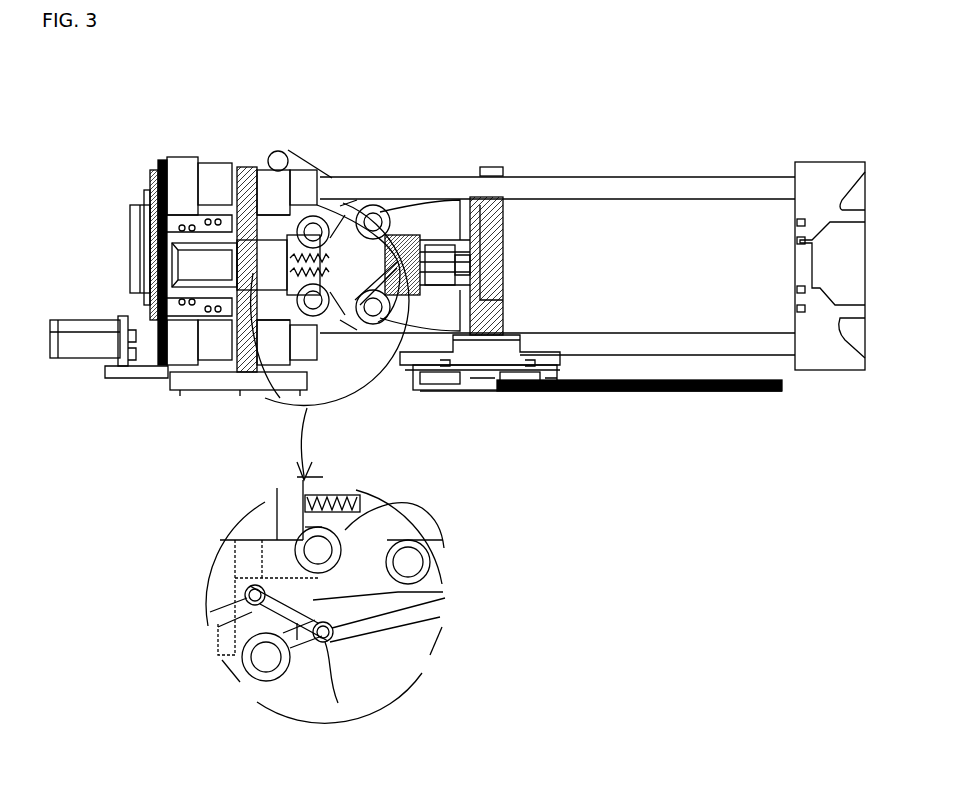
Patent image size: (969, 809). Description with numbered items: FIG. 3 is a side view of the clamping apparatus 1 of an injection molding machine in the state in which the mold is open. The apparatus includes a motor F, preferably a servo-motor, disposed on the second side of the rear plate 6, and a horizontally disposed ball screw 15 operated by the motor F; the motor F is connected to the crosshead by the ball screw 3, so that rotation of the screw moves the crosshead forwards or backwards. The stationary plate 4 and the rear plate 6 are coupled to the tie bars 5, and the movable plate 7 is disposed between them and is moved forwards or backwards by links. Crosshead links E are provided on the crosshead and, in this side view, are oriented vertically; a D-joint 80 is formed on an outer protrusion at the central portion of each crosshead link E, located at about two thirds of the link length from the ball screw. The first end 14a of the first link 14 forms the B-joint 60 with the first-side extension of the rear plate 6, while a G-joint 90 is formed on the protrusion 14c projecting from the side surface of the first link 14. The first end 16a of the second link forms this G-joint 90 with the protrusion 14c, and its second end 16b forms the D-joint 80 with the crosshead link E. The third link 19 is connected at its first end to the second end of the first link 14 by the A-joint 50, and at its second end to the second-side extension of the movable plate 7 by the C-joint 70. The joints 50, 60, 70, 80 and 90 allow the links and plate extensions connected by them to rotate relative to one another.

The clamping apparatus 1 is at (416, 312).
The ball screw 3 is at (605, 178).
The stationary plate 4 is at (828, 372).
The tie bars 5 is at (605, 352).
The rear plate 6 is at (248, 166).
The movable plate 7 is at (495, 392).
The motor F is at (128, 258).
The crosshead links E is at (207, 632).
The first link 14 is at (250, 628).
The first end of the first link 14a is at (350, 520).
The protrusion of the first link 14c is at (325, 642).
The ball screw 15 is at (298, 642).
The first end of the second link 16a is at (333, 640).
The second end of the second link 16b is at (265, 580).
The third link 19 is at (375, 603).
The A-joint 50 is at (263, 662).
The B-joint 60 is at (317, 548).
The C-joint 70 is at (410, 562).
The D-joint 80 is at (246, 592).
The G-joint 90 is at (328, 640).